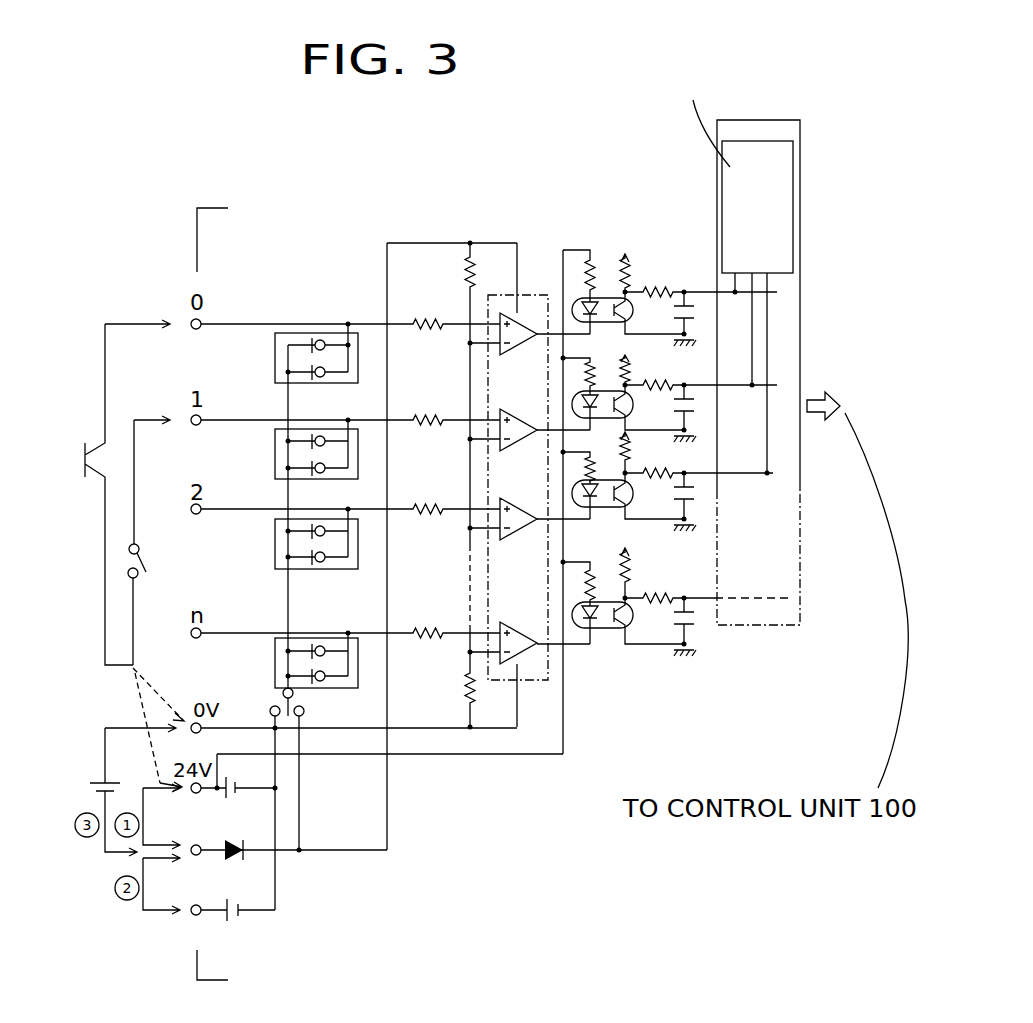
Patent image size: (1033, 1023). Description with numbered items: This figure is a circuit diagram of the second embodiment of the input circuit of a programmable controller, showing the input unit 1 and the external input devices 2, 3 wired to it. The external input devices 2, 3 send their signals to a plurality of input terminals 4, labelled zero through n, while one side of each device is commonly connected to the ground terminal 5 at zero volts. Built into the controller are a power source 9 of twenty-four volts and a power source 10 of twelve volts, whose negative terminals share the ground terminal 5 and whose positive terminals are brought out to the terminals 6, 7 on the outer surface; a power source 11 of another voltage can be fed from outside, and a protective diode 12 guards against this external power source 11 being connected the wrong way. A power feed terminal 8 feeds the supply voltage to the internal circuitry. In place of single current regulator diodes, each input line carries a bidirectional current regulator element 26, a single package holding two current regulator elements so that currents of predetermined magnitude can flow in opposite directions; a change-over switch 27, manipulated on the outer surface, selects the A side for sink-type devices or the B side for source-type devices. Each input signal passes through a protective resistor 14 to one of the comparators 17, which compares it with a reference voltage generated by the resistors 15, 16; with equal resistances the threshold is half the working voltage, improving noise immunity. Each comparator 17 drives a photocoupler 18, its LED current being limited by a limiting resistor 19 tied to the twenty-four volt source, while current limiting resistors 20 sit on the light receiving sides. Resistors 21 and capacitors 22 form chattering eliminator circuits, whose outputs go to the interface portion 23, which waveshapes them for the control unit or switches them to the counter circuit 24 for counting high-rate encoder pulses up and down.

The input unit 1 is at (197, 243).
The external input device 2 is at (85, 444).
The external input device 3 is at (128, 546).
The input terminals 4 is at (191, 320).
The 0 V terminal 5 is at (180, 712).
The terminal 6 is at (143, 788).
The terminal 7 is at (192, 916).
The power feed terminal 8 is at (190, 857).
The power source of 24 V 9 is at (240, 800).
The power source of 12 V 10 is at (240, 922).
The power source 11 is at (87, 787).
The protective diode 12 is at (240, 862).
The protective resistors 14 is at (420, 313).
The resistor 15 is at (457, 263).
The resistor 16 is at (477, 700).
The comparators 17 is at (538, 294).
The photocouplers 18 is at (602, 294).
The limiting resistors 19 is at (597, 265).
The current limiting resistors 20 is at (637, 267).
The resistors 21 is at (660, 283).
The capacitors 22 is at (698, 300).
The interface portion 23 is at (782, 630).
The counter circuit 24 is at (800, 237).
The bidirectional current regulator elements 26 is at (277, 333).
The change-over switch 27 is at (297, 692).